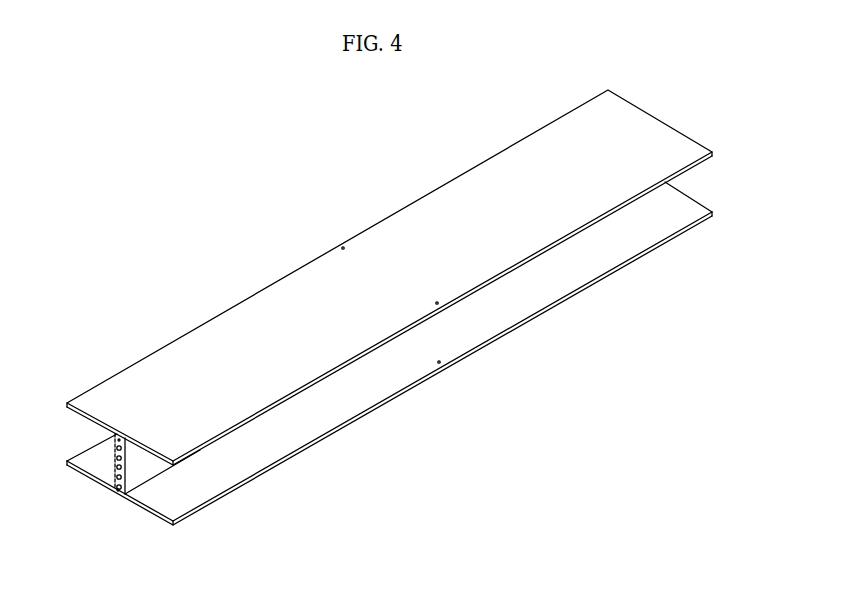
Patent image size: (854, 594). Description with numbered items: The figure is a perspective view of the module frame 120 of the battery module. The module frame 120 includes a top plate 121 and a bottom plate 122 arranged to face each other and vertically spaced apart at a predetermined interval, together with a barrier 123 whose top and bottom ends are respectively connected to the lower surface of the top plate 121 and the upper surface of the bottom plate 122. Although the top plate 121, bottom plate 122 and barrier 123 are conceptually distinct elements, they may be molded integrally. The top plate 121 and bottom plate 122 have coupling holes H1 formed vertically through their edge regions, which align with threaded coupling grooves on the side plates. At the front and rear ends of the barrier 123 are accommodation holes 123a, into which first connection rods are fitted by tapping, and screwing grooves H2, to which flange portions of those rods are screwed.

The module frame 120 is at (193, 173).
The top plate 121 is at (490, 174).
The bottom plate 122 is at (509, 318).
The barrier 123 is at (143, 468).
The accommodation holes 123a is at (116, 449).
The coupling holes H1 is at (437, 303).
The screwing grooves H2 is at (118, 440).